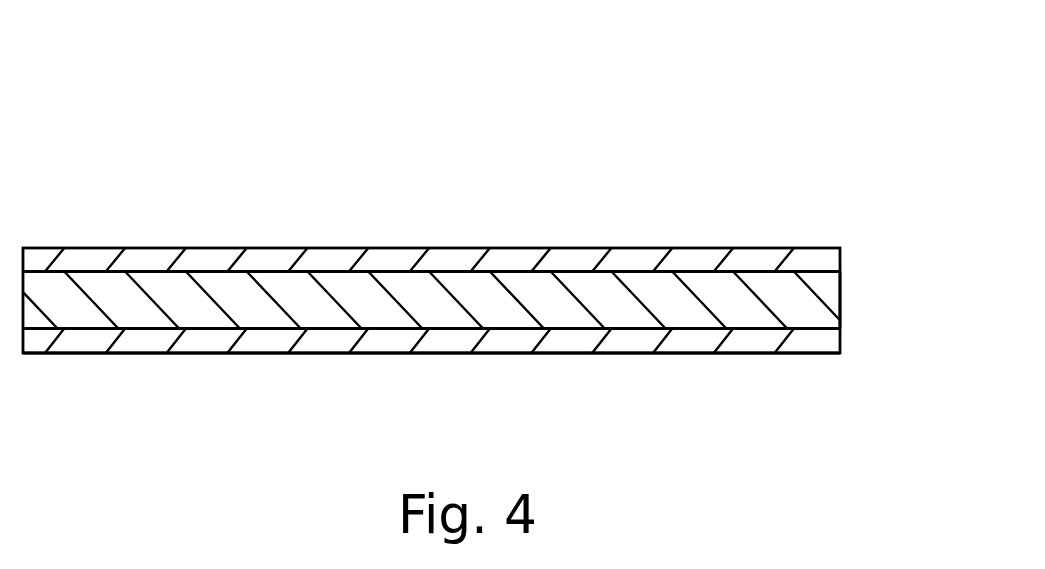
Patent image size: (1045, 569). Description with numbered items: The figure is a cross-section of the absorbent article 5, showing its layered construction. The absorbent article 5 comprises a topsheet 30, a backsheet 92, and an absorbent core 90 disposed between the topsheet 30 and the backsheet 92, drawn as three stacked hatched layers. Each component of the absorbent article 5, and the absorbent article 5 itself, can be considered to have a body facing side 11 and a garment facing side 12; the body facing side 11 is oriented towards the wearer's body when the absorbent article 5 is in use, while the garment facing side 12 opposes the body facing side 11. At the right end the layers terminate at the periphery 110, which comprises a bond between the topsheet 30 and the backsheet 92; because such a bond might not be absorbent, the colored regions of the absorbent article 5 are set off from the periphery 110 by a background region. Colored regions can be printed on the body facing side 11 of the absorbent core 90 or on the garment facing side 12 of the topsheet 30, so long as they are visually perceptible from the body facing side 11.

The absorbent article 5 is at (607, 143).
The body facing side 11 is at (700, 248).
The garment facing side 12 is at (672, 353).
The topsheet 30 is at (768, 261).
The absorbent core 90 is at (798, 298).
The backsheet 92 is at (768, 340).
The periphery 110 is at (840, 292).